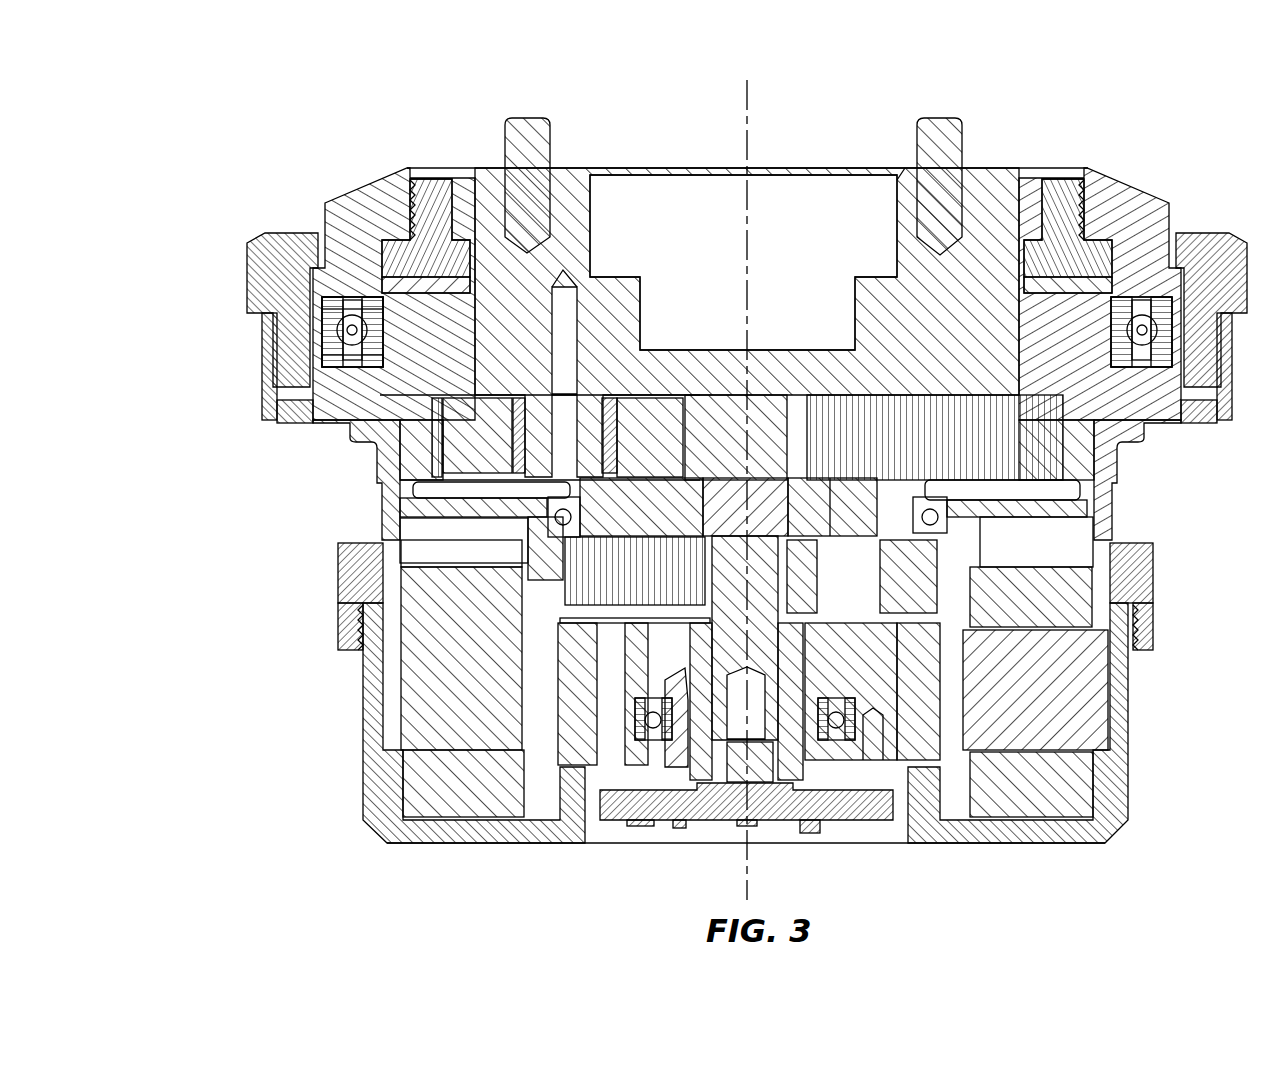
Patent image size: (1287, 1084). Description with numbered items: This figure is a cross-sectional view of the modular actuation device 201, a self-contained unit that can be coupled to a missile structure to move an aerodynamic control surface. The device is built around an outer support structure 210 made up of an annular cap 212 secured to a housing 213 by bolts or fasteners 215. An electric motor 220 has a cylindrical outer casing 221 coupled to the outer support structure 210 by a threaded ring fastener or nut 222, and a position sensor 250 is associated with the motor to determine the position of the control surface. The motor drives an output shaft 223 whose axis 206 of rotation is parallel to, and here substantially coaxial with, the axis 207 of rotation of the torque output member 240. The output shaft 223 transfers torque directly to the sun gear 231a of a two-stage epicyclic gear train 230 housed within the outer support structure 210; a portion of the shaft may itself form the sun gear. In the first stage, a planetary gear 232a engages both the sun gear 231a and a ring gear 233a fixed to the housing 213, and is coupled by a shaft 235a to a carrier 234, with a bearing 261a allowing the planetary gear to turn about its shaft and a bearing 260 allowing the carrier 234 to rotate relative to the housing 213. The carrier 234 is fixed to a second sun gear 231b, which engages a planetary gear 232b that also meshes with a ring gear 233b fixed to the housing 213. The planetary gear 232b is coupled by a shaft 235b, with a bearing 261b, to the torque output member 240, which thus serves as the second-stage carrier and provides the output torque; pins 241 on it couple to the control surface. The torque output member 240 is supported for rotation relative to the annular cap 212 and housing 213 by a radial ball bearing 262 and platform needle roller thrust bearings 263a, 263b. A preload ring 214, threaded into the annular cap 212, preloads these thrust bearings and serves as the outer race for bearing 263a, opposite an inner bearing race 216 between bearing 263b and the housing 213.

The modular actuation device 201 is at (365, 100).
The axis of rotation of the electric motor output shaft 206 is at (747, 887).
The axis of rotation of the torque output member 207 is at (750, 243).
The outer support structure 210 is at (228, 405).
The annular cap 212 is at (385, 195).
The housing 213 is at (345, 545).
The preload ring 214 is at (428, 195).
The bolts or fasteners 215 is at (265, 233).
The inner bearing race 216 is at (440, 398).
The electric motor 220 is at (1140, 760).
The outer casing 221 is at (1130, 720).
The threaded ring fastener or nut 222 is at (1155, 600).
The output shaft 223 is at (660, 680).
The epicyclic gear train 230 is at (1078, 452).
The sun gear 231a is at (595, 680).
The second sun gear 231b is at (1060, 424).
The planetary gear 232a is at (908, 760).
The planetary gear 232b is at (560, 425).
The ring gear 233a is at (720, 600).
The ring gear 233b is at (540, 460).
The carrier 234 is at (1085, 490).
The shaft 235a is at (935, 520).
The shaft 235b is at (385, 515).
The torque output member 240 is at (580, 168).
The pins 241 is at (540, 118).
The position sensor 250 is at (780, 820).
The bearing 260 is at (548, 520).
The bearing 261a is at (1120, 680).
The bearing 261b is at (520, 435).
The radial ball bearing 262 is at (325, 333).
The platform needle roller thrust bearing 263a is at (320, 290).
The platform needle roller thrust bearing 263b is at (320, 352).